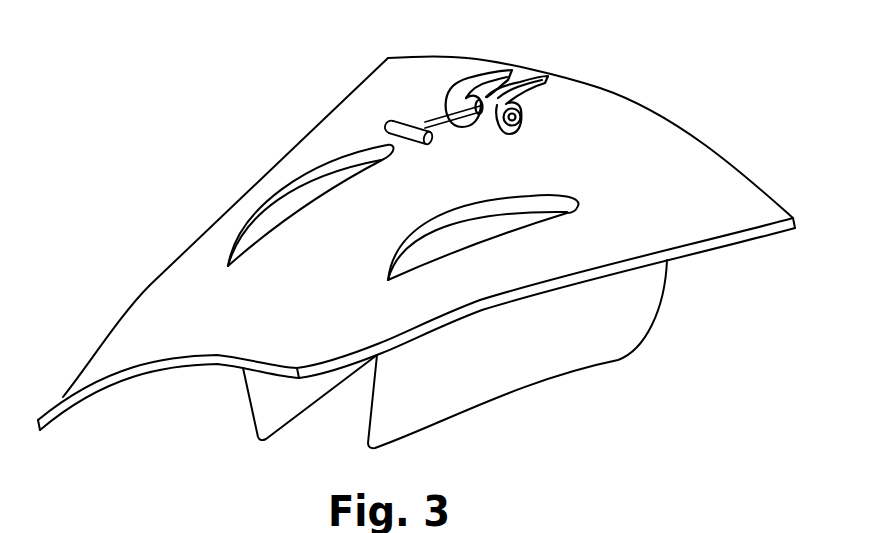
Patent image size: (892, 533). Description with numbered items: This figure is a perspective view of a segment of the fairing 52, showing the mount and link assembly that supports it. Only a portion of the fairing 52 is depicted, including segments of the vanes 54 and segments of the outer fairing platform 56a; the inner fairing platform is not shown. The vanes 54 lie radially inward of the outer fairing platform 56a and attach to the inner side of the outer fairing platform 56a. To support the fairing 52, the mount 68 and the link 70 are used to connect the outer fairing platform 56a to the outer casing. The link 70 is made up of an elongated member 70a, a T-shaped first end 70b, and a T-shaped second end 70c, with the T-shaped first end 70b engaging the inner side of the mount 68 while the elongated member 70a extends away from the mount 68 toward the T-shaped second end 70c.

The fairing 52 is at (128, 158).
The vanes 54 is at (263, 405).
The outer fairing platform 56a is at (690, 170).
The mount 68 is at (546, 78).
The link 70 is at (424, 108).
The elongated member 70a is at (447, 105).
The T-shaped first end 70b is at (522, 117).
The T-shaped second end 70c is at (388, 123).